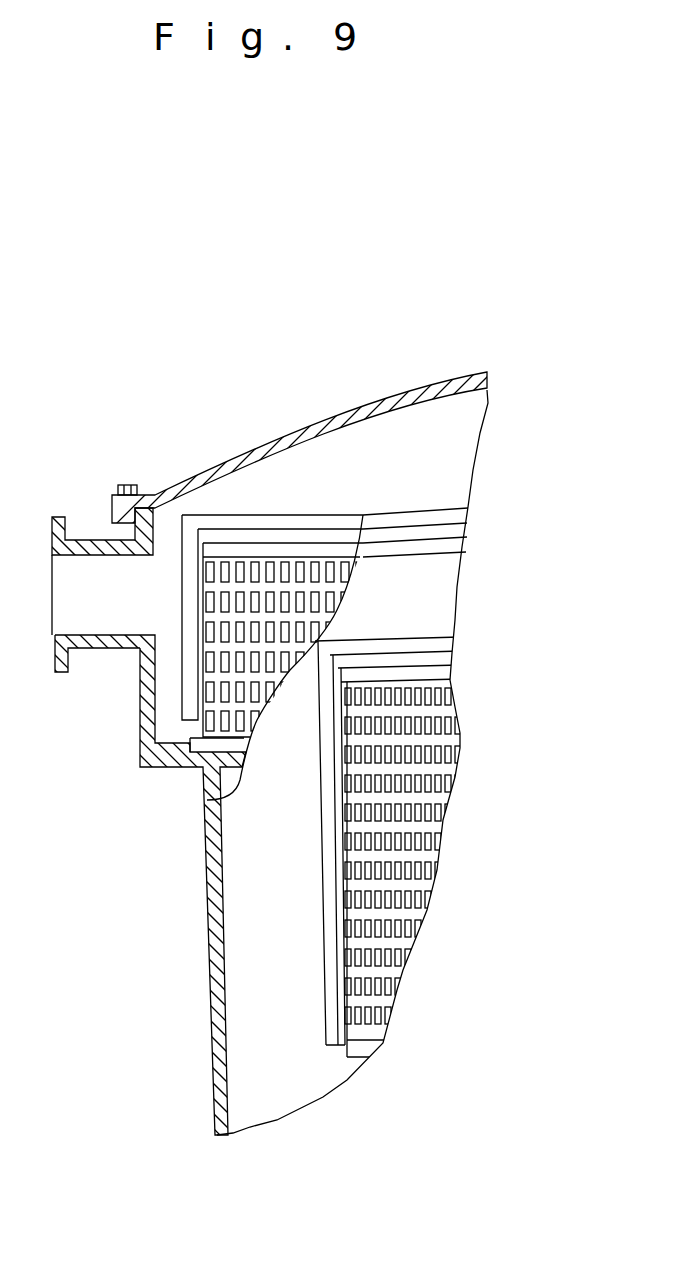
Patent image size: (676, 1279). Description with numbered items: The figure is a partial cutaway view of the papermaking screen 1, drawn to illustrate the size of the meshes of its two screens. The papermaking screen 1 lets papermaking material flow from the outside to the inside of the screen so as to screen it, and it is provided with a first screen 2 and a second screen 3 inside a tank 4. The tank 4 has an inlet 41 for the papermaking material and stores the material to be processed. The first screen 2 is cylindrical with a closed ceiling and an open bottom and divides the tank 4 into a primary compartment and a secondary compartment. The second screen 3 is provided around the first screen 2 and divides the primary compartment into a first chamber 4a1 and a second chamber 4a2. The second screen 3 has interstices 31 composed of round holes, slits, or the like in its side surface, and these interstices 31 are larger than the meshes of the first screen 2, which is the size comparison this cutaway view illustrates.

The papermaking screen 1 is at (318, 355).
The first screen 2 is at (446, 847).
The second screen 3 is at (363, 613).
The interstices (screen mesh) of the second screen 31 is at (317, 600).
The tank 4 is at (338, 810).
The first chamber 4a1 is at (172, 698).
The second chamber 4a2 is at (267, 887).
The inlet 41 is at (108, 612).